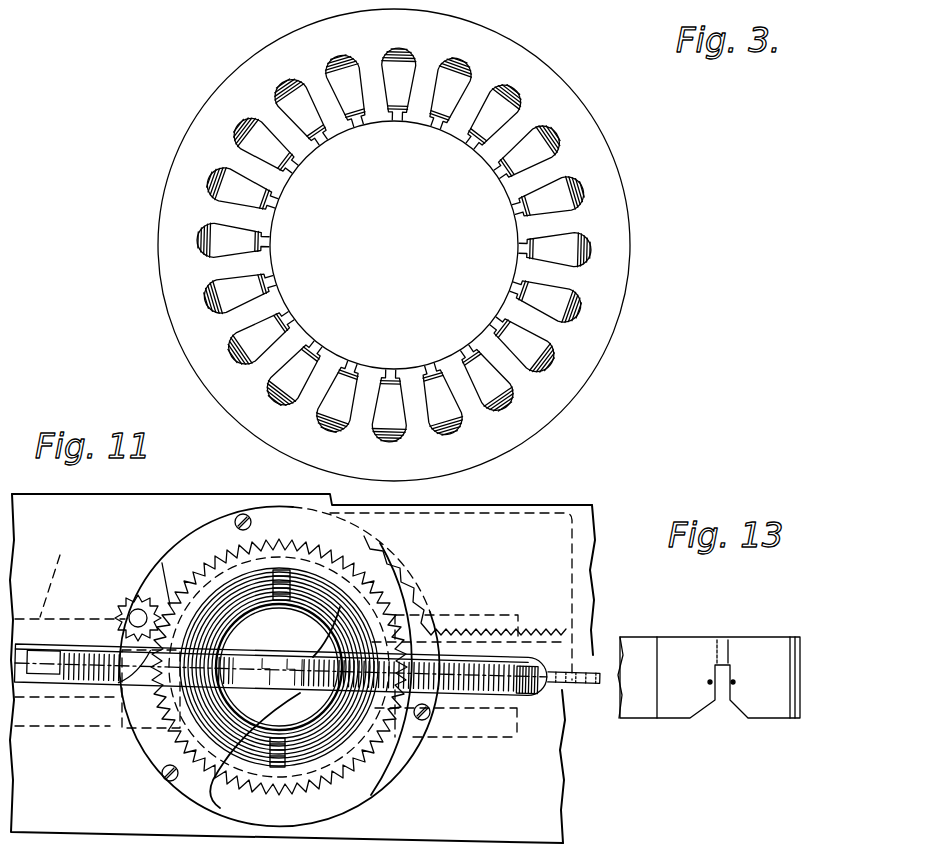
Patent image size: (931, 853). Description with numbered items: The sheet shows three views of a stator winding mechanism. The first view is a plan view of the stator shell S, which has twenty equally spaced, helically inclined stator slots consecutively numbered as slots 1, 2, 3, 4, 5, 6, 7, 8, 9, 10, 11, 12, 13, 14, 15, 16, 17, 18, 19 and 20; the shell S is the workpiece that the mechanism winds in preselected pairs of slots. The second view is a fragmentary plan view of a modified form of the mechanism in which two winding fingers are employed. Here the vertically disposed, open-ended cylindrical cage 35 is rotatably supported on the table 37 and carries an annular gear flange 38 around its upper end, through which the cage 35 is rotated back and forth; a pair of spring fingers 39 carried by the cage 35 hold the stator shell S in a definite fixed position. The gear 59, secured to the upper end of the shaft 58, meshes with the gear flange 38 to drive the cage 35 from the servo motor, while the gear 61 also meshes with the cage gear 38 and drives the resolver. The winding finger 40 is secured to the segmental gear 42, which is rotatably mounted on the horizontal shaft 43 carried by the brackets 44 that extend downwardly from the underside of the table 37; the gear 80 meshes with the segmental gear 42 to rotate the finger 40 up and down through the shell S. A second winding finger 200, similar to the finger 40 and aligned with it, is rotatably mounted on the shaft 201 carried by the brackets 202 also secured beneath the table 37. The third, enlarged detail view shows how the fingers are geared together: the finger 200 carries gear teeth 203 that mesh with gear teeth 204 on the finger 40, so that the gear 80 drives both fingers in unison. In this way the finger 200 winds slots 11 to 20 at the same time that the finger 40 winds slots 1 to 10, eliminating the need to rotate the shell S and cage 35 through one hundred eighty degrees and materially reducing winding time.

In FIG. 3, the stator shell S is at (585, 108).
In FIG. 3, the stator slot 1 is at (212, 181).
In FIG. 3, the stator slot 2 is at (241, 128).
In FIG. 3, the stator slot 3 is at (285, 86).
In FIG. 3, the stator slot 4 is at (339, 60).
In FIG. 3, the stator slot 5 is at (399, 52).
In FIG. 3, the stator slot 6 is at (458, 63).
In FIG. 3, the stator slot 7 is at (511, 92).
In FIG. 3, the stator slot 8 is at (553, 136).
In FIG. 3, the stator slot 9 is at (579, 190).
In FIG. 3, the stator slot 10 is at (587, 250).
In FIG. 3, the stator slot 11 is at (576, 309).
In FIG. 3, the stator slot 12 is at (547, 362).
In FIG. 11, the stator slot 12 is at (581, 696).
In FIG. 3, the stator slot 13 is at (503, 404).
In FIG. 3, the stator slot 14 is at (449, 430).
In FIG. 3, the stator slot 15 is at (389, 438).
In FIG. 3, the stator slot 16 is at (330, 427).
In FIG. 3, the stator slot 17 is at (277, 398).
In FIG. 3, the stator slot 18 is at (235, 354).
In FIG. 3, the stator slot 19 is at (209, 300).
In FIG. 3, the stator slot 20 is at (201, 240).
In FIG. 11, the cylindrical cage 35 is at (270, 694).
In FIG. 11, the table 37 is at (575, 506).
In FIG. 11, the annular gear flange 38 is at (213, 557).
In FIG. 11, the spring fingers 39 is at (284, 570).
In FIG. 11, the winding finger 40 is at (295, 684).
In FIG. 13, the winding finger 40 is at (763, 713).
In FIG. 11, the segmental gear 42 is at (528, 697).
In FIG. 11, the horizontal shaft 43 is at (412, 753).
In FIG. 11, the brackets 44 is at (497, 615).
In FIG. 11, the shaft 58 is at (129, 616).
In FIG. 11, the gear 59 is at (140, 596).
In FIG. 11, the gear 61 is at (592, 512).
In FIG. 11, the gear 80 is at (594, 672).
In FIG. 11, the second winding finger 200 is at (249, 682).
In FIG. 13, the second winding finger 200 is at (670, 708).
In FIG. 11, the shaft 201 is at (120, 723).
In FIG. 11, the brackets 202 is at (88, 752).
In FIG. 11, the gear teeth 203 is at (268, 660).
In FIG. 13, the gear teeth 203 is at (712, 650).
In FIG. 11, the gear teeth 204 is at (291, 660).
In FIG. 13, the gear teeth 204 is at (733, 656).